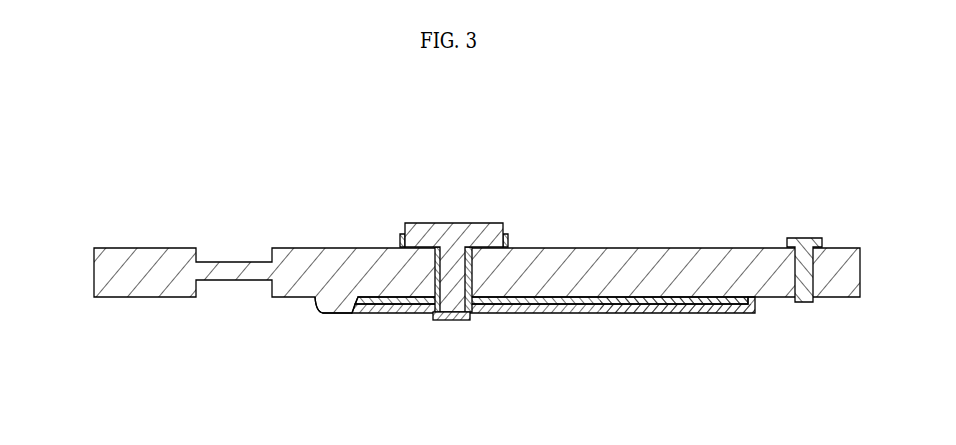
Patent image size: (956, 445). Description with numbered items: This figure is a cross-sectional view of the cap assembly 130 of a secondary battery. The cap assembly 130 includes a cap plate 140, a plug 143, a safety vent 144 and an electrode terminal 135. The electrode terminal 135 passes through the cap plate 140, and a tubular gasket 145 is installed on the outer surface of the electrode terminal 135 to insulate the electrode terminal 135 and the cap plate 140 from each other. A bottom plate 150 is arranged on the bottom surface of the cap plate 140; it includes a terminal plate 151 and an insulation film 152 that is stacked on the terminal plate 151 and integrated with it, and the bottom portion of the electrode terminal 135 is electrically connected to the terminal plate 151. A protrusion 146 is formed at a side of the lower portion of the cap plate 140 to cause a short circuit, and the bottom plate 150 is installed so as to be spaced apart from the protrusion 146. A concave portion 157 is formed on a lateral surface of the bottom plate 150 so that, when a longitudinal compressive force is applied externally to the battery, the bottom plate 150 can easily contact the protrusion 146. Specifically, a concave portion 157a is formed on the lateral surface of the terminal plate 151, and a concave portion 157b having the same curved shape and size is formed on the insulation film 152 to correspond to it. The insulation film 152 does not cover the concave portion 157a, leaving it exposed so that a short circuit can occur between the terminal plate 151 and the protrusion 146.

The cap assembly 130 is at (67, 156).
The cap plate 140 is at (137, 257).
The safety vent 144 is at (232, 270).
The protrusion 146 is at (322, 309).
The electrode terminal 135 is at (453, 236).
The tubular gasket 145 is at (506, 236).
The plug 143 is at (803, 238).
The concave portion 157 is at (525, 365).
The concave portion 157a is at (359, 306).
The concave portion 157b is at (404, 389).
The bottom plate 150 is at (697, 365).
The terminal plate 151 is at (677, 347).
The insulation film 152 is at (757, 300).